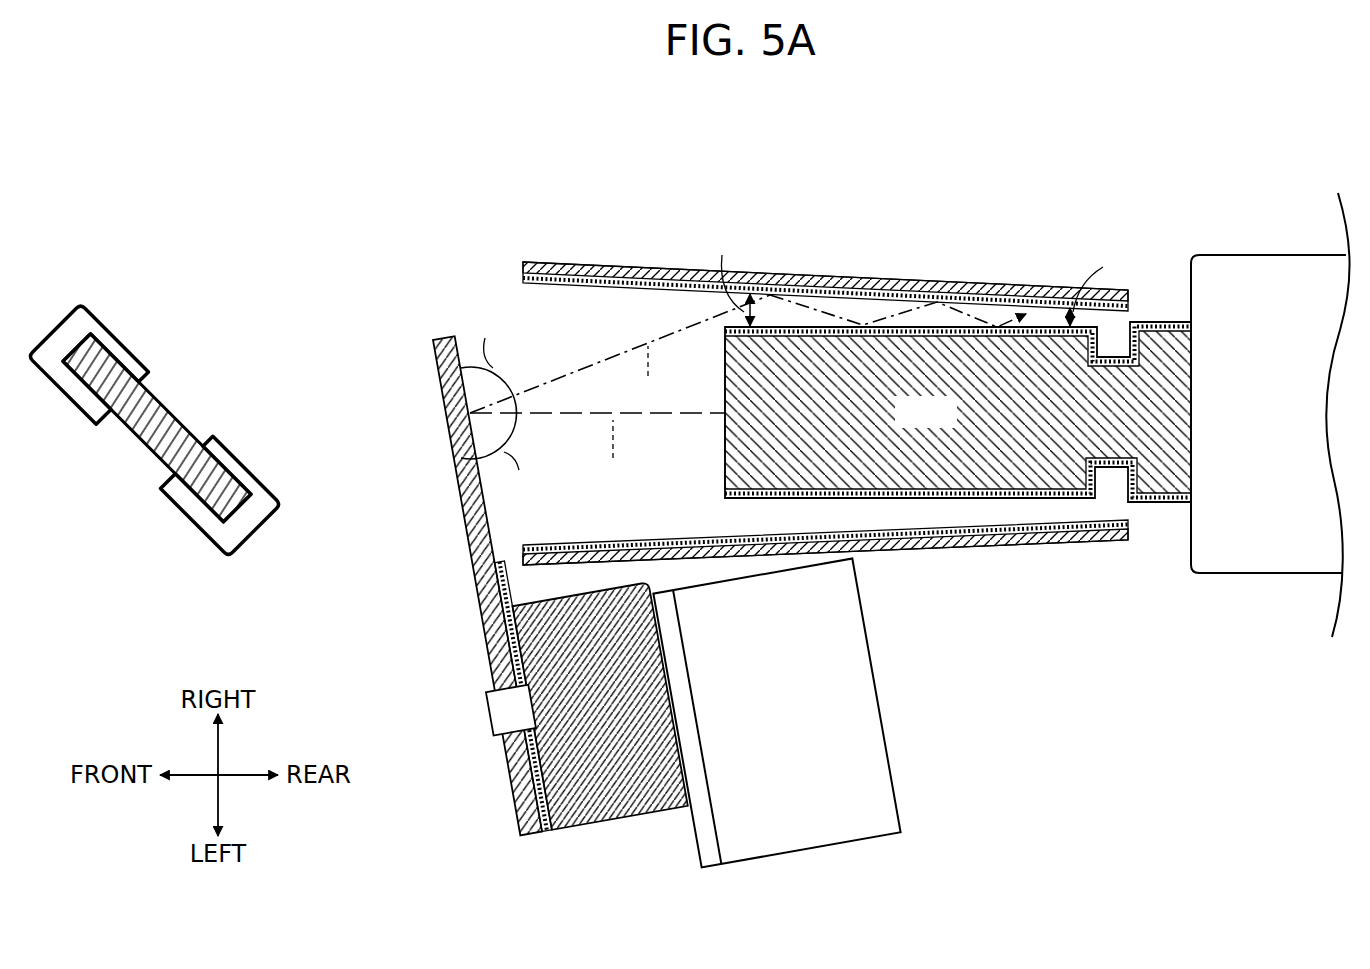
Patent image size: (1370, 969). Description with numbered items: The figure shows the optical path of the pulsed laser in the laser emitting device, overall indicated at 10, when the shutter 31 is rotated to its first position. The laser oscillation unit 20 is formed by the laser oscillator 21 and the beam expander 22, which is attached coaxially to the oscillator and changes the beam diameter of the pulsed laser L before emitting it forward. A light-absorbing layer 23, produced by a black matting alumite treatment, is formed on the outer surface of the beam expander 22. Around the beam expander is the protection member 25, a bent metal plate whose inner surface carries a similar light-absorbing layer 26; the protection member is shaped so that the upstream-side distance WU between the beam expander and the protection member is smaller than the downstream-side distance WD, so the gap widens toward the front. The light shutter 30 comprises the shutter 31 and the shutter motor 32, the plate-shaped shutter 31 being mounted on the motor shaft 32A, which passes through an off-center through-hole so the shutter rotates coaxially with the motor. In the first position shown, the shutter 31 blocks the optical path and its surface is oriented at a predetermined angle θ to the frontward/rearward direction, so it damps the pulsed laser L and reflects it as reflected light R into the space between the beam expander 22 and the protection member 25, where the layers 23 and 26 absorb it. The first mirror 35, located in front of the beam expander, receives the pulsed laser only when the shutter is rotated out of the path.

The imaging device 10 is at (488, 222).
The laser oscillation unit 20 is at (1177, 227).
The laser oscillator 21 is at (1247, 427).
The beam expander 22 is at (908, 427).
The light-absorbing layer 23 is at (822, 328).
The protection member 25 is at (632, 259).
The light-absorbing layer 26 is at (577, 278).
The light shutter 30 is at (491, 781).
The shutter 31 is at (472, 546).
The shutter motor 32 is at (588, 720).
The motor shaft 32A is at (512, 706).
The first mirror 35 is at (143, 478).